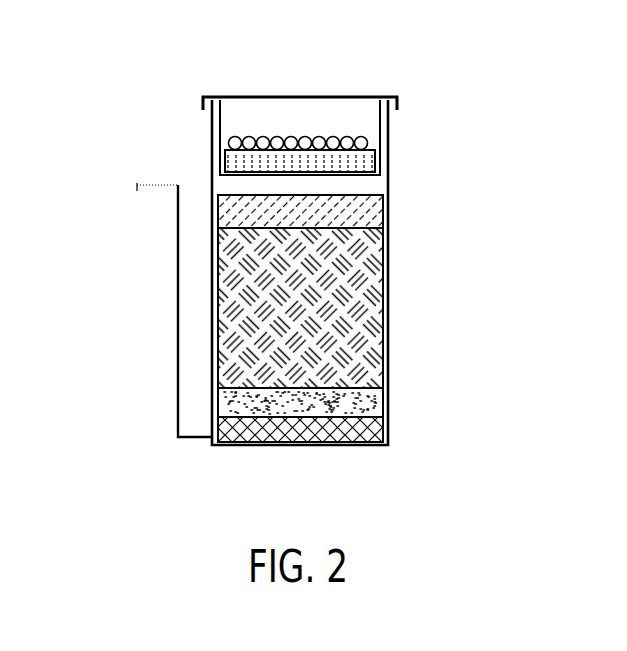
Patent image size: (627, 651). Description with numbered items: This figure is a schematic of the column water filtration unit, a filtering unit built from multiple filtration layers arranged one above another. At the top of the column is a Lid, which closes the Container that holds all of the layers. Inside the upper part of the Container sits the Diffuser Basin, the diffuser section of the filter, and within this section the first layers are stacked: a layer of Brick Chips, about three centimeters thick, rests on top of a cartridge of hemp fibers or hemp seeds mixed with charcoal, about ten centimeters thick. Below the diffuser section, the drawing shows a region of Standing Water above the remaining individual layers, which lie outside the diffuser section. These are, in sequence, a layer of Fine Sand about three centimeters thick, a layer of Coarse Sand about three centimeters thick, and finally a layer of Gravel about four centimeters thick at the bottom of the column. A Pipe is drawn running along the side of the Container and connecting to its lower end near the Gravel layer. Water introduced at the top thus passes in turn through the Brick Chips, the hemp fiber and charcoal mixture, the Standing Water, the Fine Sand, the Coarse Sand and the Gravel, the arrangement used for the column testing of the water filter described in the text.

The lid Lid is at (193, 102).
The container Container is at (193, 158).
The pipe Pipe is at (160, 328).
The diffuser section Diffuser Basin is at (370, 108).
The brick chips Brick Chips is at (413, 138).
The standing water Standing Water is at (413, 207).
The fine sand Fine Sand is at (409, 295).
The coarse sand Coarse Sand is at (409, 390).
The gravel Gravel is at (409, 432).